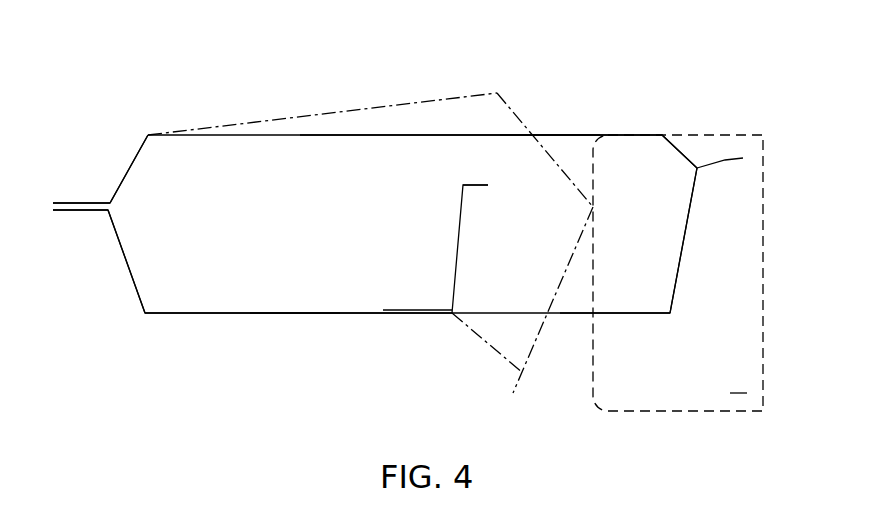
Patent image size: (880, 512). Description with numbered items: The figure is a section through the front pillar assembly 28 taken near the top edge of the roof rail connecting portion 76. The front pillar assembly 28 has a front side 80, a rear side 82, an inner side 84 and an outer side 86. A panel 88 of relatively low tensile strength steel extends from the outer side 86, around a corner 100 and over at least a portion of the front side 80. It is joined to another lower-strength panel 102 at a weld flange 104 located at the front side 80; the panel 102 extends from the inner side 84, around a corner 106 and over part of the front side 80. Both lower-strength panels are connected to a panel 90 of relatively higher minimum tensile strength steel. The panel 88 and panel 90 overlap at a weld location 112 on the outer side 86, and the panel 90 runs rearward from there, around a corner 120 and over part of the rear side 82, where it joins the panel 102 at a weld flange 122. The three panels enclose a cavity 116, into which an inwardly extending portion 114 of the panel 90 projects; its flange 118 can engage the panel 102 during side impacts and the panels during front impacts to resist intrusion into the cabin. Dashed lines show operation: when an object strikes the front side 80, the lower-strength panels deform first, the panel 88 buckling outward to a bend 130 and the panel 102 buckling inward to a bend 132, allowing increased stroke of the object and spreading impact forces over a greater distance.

The front pillar assembly 28 is at (375, 166).
The roof rail connecting portion 76 is at (450, 75).
The front side 80 is at (715, 273).
The rear side 82 is at (75, 191).
The inner side 84 is at (322, 71).
The outer side 86 is at (237, 353).
The panel 88 is at (680, 263).
The panel 90 is at (130, 280).
The corner 100 is at (670, 313).
The panel 102 is at (530, 132).
The weld flange 104 is at (725, 160).
The corner 106 is at (662, 135).
The weld location 112 is at (392, 310).
The inwardly extending portion 114 is at (433, 237).
The cavity 116 is at (346, 343).
The flange 118 is at (483, 187).
The corner 120 is at (140, 313).
The weld flange 122 is at (75, 203).
The bend 130 is at (513, 390).
The bend 132 is at (497, 93).